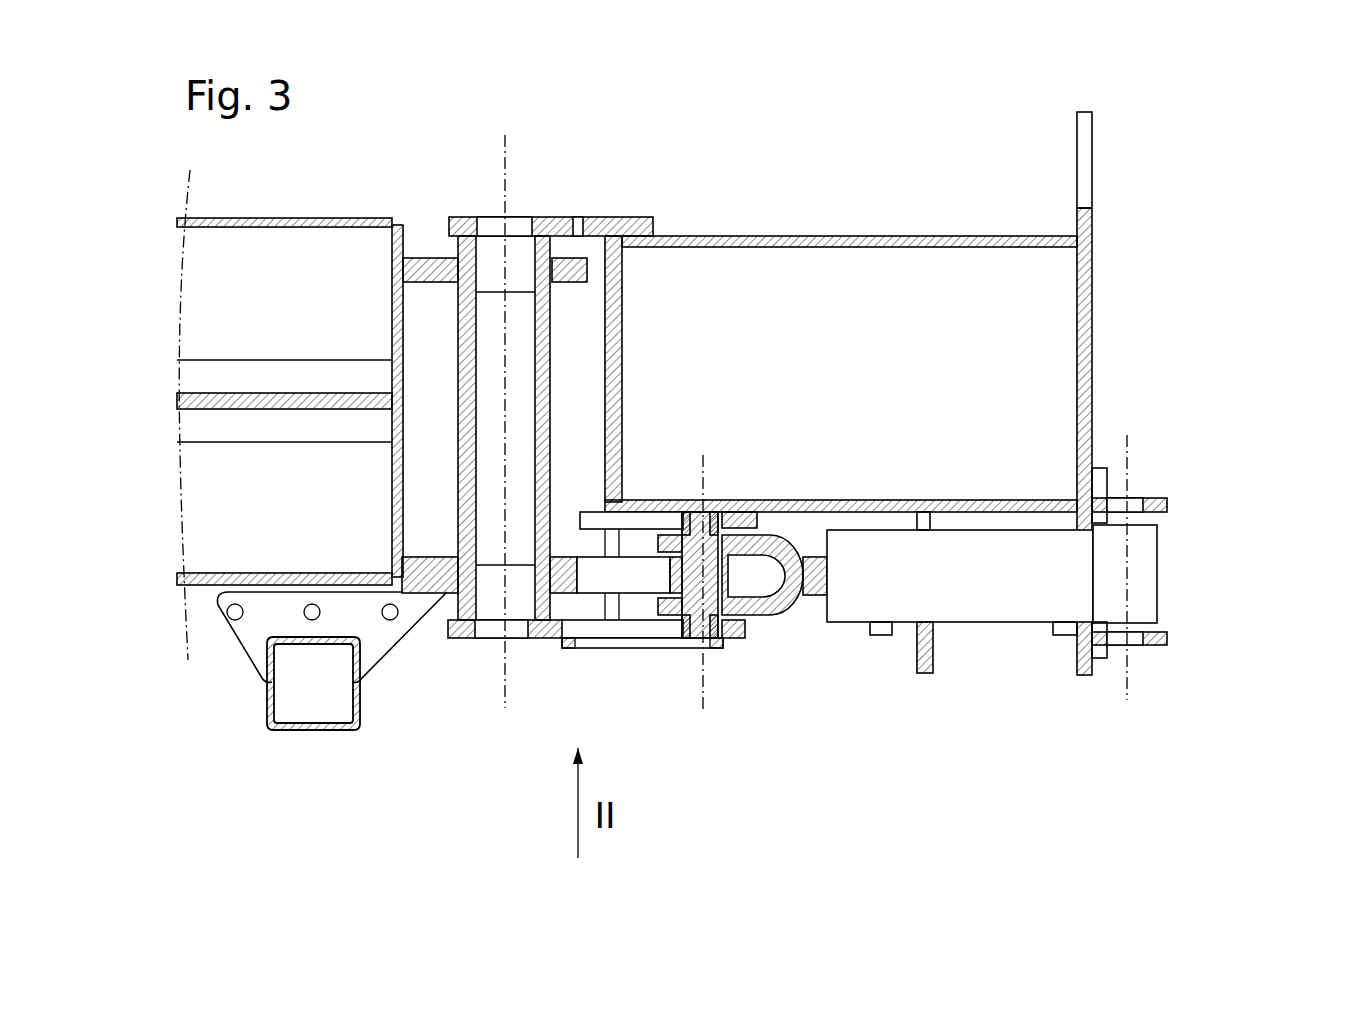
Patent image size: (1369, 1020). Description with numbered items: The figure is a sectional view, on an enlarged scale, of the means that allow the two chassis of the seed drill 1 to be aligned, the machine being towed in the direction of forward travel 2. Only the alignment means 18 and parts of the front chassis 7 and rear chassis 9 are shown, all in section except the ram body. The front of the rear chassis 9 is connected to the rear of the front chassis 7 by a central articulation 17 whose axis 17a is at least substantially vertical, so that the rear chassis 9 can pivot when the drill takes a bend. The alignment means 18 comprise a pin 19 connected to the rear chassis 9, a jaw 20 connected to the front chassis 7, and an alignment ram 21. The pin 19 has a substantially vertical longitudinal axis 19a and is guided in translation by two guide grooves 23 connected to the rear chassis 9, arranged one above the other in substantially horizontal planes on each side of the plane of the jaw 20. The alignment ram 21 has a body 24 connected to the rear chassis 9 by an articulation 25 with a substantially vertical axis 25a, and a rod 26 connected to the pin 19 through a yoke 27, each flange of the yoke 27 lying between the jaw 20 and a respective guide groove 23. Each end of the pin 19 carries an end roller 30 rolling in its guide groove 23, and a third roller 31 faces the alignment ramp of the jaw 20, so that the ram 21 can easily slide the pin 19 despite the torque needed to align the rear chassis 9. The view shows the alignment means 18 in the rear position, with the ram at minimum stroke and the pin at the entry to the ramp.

The seed drill 1 is at (695, 163).
The direction of forward travel 2 is at (203, 815).
The front chassis 7 is at (265, 218).
The rear chassis 9 is at (913, 235).
The central articulation 17 is at (480, 682).
The axis of the central articulation 17a is at (505, 188).
The alignment means 18 is at (887, 700).
The pin 19 is at (707, 508).
The longitudinal axis of the pin 19a is at (703, 698).
The jaw 20 is at (570, 540).
The alignment ram 21 is at (1197, 580).
The guide grooves 23 is at (583, 510).
The body of the alignment ram 24 is at (972, 622).
The articulation 25 is at (1172, 470).
The axis of the articulation 25a is at (1127, 690).
The rod 26 is at (815, 597).
The yoke 27 is at (782, 615).
The end rollers 30 is at (725, 523).
The third roller 31 is at (675, 570).